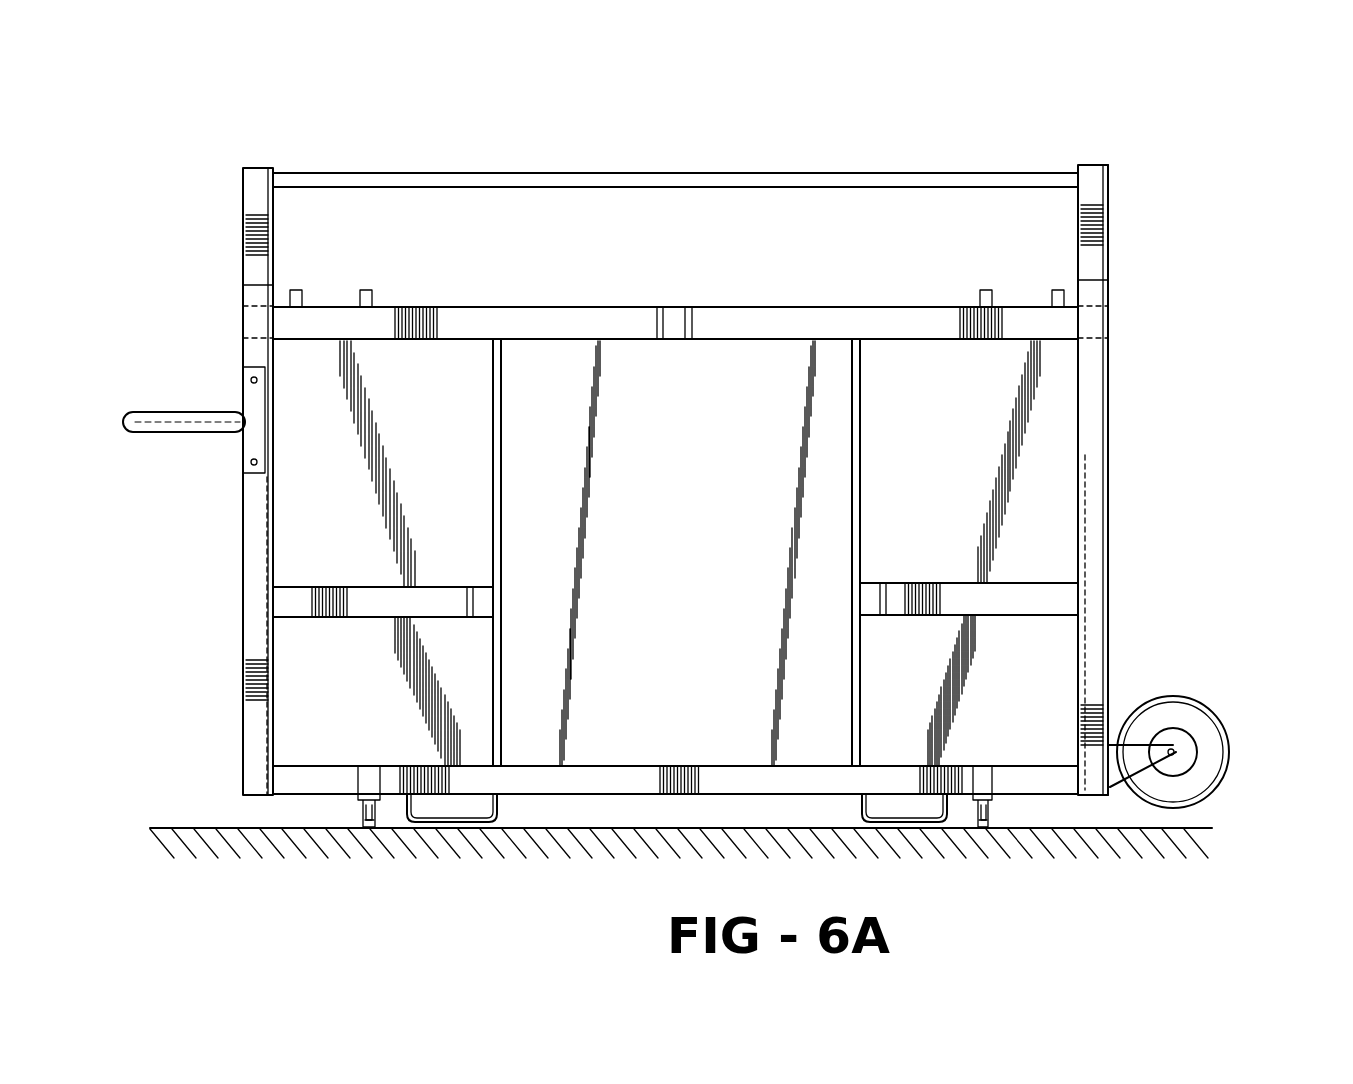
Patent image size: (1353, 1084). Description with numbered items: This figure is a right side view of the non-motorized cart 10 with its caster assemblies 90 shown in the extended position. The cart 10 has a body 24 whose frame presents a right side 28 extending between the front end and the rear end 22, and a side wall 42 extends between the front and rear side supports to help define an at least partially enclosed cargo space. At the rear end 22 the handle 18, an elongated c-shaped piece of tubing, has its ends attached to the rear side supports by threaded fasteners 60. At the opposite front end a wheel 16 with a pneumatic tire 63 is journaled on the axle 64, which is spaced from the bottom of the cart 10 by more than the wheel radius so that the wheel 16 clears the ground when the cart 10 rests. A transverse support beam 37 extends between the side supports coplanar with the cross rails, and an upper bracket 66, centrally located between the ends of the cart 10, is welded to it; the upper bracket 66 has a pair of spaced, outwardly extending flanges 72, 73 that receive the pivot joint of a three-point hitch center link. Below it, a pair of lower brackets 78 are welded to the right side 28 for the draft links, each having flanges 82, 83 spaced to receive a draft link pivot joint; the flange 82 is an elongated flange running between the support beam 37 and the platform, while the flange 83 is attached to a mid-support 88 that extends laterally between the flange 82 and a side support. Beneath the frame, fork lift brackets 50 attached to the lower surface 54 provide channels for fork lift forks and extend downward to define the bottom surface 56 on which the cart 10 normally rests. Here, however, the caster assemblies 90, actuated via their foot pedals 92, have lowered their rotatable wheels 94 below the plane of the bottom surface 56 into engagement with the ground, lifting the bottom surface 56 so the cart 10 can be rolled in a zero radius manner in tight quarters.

The non-motorized cart 10 is at (708, 146).
The wheels 16 is at (1229, 757).
The handle 18 is at (124, 412).
The rear end 22 is at (1108, 347).
The body 24 is at (1122, 435).
The right side 28 is at (257, 617).
The transverse support beam 37 is at (591, 306).
The side wall 42 is at (630, 737).
The fork lift brackets 50 is at (498, 801).
The lower surface 54 is at (616, 796).
The bottom surface 56 is at (462, 826).
The threaded fasteners 60 is at (252, 375).
The pneumatic tires 63 is at (1175, 712).
The axle 64 is at (1180, 749).
The upper bracket 66 is at (677, 268).
The flange 72 is at (660, 340).
The flange 73 is at (689, 340).
The lower brackets 78 is at (455, 530).
The flange 82 is at (502, 601).
The flange 83 is at (470, 618).
The mid-supports 88 is at (300, 587).
The caster assemblies 90 is at (333, 742).
The foot pedal 92 is at (370, 798).
The rotatable wheels 94 is at (371, 829).